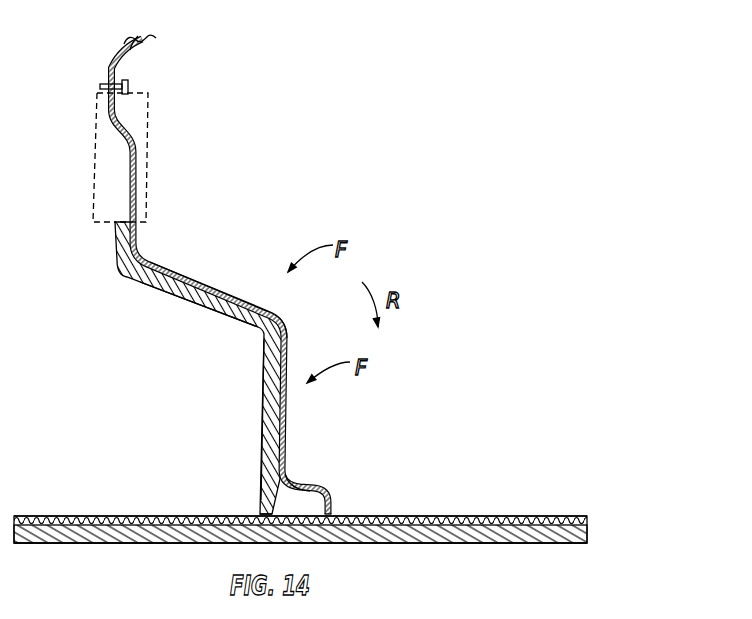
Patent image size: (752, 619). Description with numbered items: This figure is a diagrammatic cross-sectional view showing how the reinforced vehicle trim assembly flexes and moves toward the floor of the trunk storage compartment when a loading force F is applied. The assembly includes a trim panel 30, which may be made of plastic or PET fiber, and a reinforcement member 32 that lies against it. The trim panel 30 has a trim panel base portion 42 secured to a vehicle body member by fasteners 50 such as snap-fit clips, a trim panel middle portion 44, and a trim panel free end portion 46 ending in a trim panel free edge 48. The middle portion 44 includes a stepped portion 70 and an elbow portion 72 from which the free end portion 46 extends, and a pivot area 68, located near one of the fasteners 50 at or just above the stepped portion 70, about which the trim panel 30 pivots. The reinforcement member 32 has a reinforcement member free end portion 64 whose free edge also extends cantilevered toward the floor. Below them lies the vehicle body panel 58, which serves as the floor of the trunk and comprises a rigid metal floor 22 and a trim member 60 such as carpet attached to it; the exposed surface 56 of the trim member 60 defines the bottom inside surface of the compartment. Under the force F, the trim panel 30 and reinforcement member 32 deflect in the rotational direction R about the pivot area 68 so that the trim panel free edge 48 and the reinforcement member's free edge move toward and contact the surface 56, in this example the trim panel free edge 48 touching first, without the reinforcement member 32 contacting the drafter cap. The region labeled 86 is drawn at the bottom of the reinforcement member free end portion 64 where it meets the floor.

The metal floor 22 is at (546, 537).
The trim panel 30 is at (148, 40).
The reinforcement member 32 is at (138, 282).
The trim panel base portion 42 is at (108, 68).
The trim panel middle portion 44 is at (205, 298).
The trim panel free end portion 46 is at (313, 486).
The trim panel free edge 48 is at (345, 517).
The fasteners 50 is at (130, 84).
The surface 56 is at (452, 516).
The vehicle body panel 58 is at (605, 520).
The trim member 60 is at (565, 517).
The reinforcement member free end portion 64 is at (260, 487).
The pivot area 68 is at (148, 124).
The stepped portion 70 is at (227, 325).
The elbow portion 72 is at (266, 318).
The leg bottom end 86 is at (252, 516).